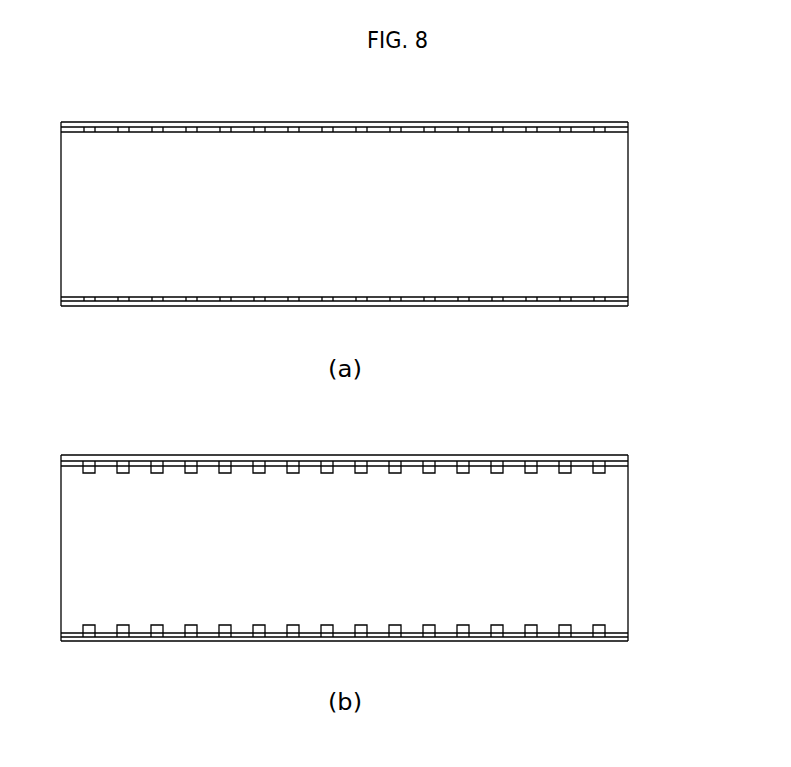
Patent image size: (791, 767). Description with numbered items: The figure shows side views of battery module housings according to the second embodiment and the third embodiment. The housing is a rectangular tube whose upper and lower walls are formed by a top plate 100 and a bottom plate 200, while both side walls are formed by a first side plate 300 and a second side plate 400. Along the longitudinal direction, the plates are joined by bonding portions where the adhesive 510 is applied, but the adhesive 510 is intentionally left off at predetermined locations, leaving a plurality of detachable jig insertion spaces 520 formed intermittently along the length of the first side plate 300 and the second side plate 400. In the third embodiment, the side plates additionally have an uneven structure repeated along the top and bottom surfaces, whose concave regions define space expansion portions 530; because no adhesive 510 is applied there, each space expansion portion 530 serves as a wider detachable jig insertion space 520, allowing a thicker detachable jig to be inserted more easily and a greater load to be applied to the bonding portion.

The top plate 100 is at (582, 122).
The bottom plate 200 is at (517, 307).
The first side plate 300 is at (612, 187).
The second side plate 400 is at (398, 381).
The adhesive 510 is at (446, 129).
The detachable jig insertion space 520 is at (463, 129).
The space expansion portion 530 is at (478, 460).